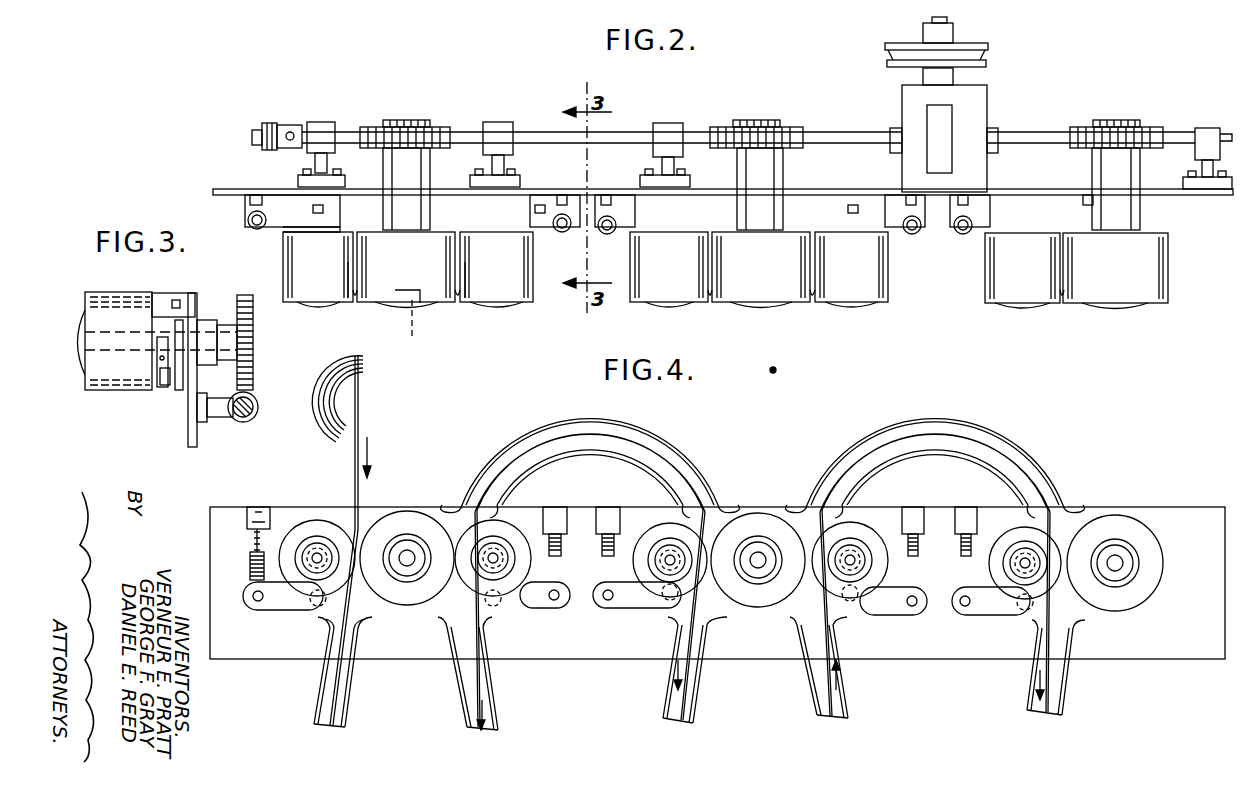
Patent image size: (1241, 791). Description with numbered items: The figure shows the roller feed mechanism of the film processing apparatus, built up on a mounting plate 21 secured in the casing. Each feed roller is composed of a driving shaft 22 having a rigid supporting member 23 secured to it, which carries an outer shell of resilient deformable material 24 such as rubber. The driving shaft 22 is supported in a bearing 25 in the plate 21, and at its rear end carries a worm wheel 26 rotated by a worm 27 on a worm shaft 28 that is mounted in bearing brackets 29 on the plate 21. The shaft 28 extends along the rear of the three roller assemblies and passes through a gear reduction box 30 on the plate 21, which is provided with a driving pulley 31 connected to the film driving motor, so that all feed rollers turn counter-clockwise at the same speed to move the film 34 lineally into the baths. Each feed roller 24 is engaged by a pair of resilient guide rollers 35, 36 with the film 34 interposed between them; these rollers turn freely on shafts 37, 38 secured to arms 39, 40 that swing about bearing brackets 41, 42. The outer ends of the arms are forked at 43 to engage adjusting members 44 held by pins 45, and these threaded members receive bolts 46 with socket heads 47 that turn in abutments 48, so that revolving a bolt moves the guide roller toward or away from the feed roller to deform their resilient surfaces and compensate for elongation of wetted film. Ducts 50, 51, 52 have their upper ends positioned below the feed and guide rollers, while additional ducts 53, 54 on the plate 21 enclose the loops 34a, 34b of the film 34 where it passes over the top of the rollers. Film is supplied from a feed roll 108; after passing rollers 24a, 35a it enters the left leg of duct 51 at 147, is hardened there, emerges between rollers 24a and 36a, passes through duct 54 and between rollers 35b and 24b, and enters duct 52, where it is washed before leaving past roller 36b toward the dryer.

In FIG. 2, the mounting plate 21 is at (1203, 196).
In FIG. 4, the mounting plate 21 is at (1152, 655).
In FIG. 2, the driving shaft 22 is at (761, 255).
In FIG. 3, the driving shaft 22 is at (253, 352).
In FIG. 4, the driving shaft 22 is at (410, 556).
In FIG. 4, the rigid supporting member 23 is at (402, 548).
In FIG. 2, the feed roller 24 is at (438, 296).
In FIG. 3, the feed roller 24 is at (117, 375).
In FIG. 4, the feed roller 24 is at (392, 520).
In FIG. 2, the feed roller 24a is at (792, 296).
In FIG. 4, the feed roller 24a is at (752, 520).
In FIG. 2, the feed roller 24b is at (1146, 297).
In FIG. 4, the feed roller 24b is at (1120, 525).
In FIG. 3, the bearing 25 is at (207, 324).
In FIG. 2, the worm wheel 26 is at (372, 122).
In FIG. 3, the worm wheel 26 is at (253, 332).
In FIG. 2, the worm 27 is at (420, 126).
In FIG. 3, the worm 27 is at (258, 412).
In FIG. 2, the worm shaft 28 is at (531, 131).
In FIG. 3, the worm shaft 28 is at (245, 420).
In FIG. 2, the bearing brackets 29 is at (510, 115).
In FIG. 3, the bearing brackets 29 is at (226, 419).
In FIG. 2, the gear reduction box 30 is at (972, 113).
In FIG. 2, the driving pulley 31 is at (987, 52).
In FIG. 2, the film 34 is at (360, 282).
In FIG. 4, the film 34 is at (362, 433).
In FIG. 4, the loop of film 34a is at (650, 458).
In FIG. 4, the loop of film 34b is at (990, 458).
In FIG. 2, the guide roller 35 is at (300, 276).
In FIG. 4, the guide roller 35 is at (312, 528).
In FIG. 4, the guide roller 35a is at (655, 530).
In FIG. 4, the guide roller 35b is at (1010, 530).
In FIG. 2, the guide roller 36 is at (527, 285).
In FIG. 3, the guide roller 36 is at (92, 365).
In FIG. 4, the guide roller 36 is at (498, 528).
In FIG. 2, the guide roller 36a is at (882, 288).
In FIG. 4, the guide roller 36a is at (862, 528).
In FIG. 2, the guide roller 36b is at (1003, 295).
In FIG. 2, the shaft 37 is at (332, 296).
In FIG. 4, the shaft 37 is at (322, 550).
In FIG. 2, the shaft 38 is at (493, 304).
In FIG. 4, the shaft 38 is at (530, 530).
In FIG. 2, the arm 39 is at (282, 226).
In FIG. 4, the arm 39 is at (285, 604).
In FIG. 2, the arm 40 is at (548, 216).
In FIG. 4, the arm 40 is at (542, 600).
In FIG. 4, the bearing bracket 41 is at (315, 607).
In FIG. 4, the bearing bracket 42 is at (505, 600).
In FIG. 3, the forked end 43 is at (163, 388).
In FIG. 4, the forked end 43 is at (560, 603).
In FIG. 3, the adjusting member 44 is at (157, 372).
In FIG. 4, the adjusting member 44 is at (250, 565).
In FIG. 3, the pin 45 is at (177, 393).
In FIG. 4, the pin 45 is at (256, 602).
In FIG. 4, the bolt 46 is at (250, 542).
In FIG. 2, the socket head 47 is at (247, 222).
In FIG. 4, the socket head 47 is at (256, 506).
In FIG. 2, the abutment 48 is at (248, 206).
In FIG. 3, the abutment 48 is at (170, 296).
In FIG. 4, the abutment 48 is at (246, 522).
In FIG. 4, the duct 50 is at (352, 692).
In FIG. 4, the duct 51 is at (700, 712).
In FIG. 4, the duct 52 is at (1062, 702).
In FIG. 4, the duct 53 is at (512, 434).
In FIG. 4, the duct 54 is at (888, 434).
In FIG. 4, the feed roll 108 is at (362, 375).
In FIG. 4, the entry point of duct 51 147 is at (706, 636).